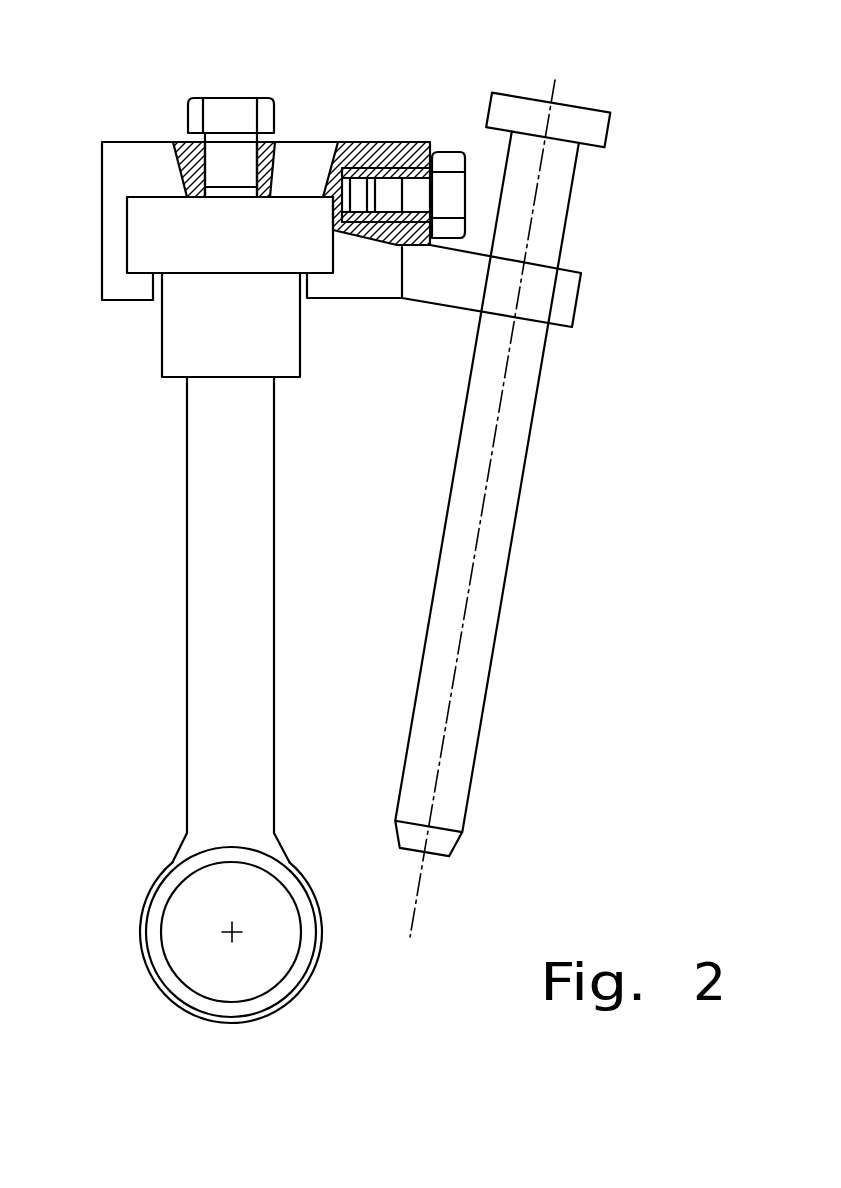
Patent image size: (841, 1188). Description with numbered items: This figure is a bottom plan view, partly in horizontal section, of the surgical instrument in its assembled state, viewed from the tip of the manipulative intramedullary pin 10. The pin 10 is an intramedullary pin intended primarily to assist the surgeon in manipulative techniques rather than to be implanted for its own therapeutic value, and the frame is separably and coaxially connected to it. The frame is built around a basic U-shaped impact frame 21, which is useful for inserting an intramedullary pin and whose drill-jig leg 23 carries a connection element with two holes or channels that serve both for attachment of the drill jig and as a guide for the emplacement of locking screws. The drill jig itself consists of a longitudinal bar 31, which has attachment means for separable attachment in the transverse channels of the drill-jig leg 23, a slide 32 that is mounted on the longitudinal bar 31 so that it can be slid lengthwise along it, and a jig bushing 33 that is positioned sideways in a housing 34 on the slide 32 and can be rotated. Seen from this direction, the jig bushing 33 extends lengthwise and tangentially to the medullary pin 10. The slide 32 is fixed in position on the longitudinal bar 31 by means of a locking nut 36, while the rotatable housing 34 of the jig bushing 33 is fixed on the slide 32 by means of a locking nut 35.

The manipulative intramedullary pin 10 is at (249, 906).
The impact frame 21 is at (215, 636).
The drill-jig leg 23 is at (203, 357).
The longitudinal bar 31 is at (175, 247).
The slide 32 is at (142, 163).
The jig bushing 33 is at (488, 595).
The housing 34 is at (565, 298).
The locking nut 35 is at (452, 162).
The locking nut 36 is at (227, 115).